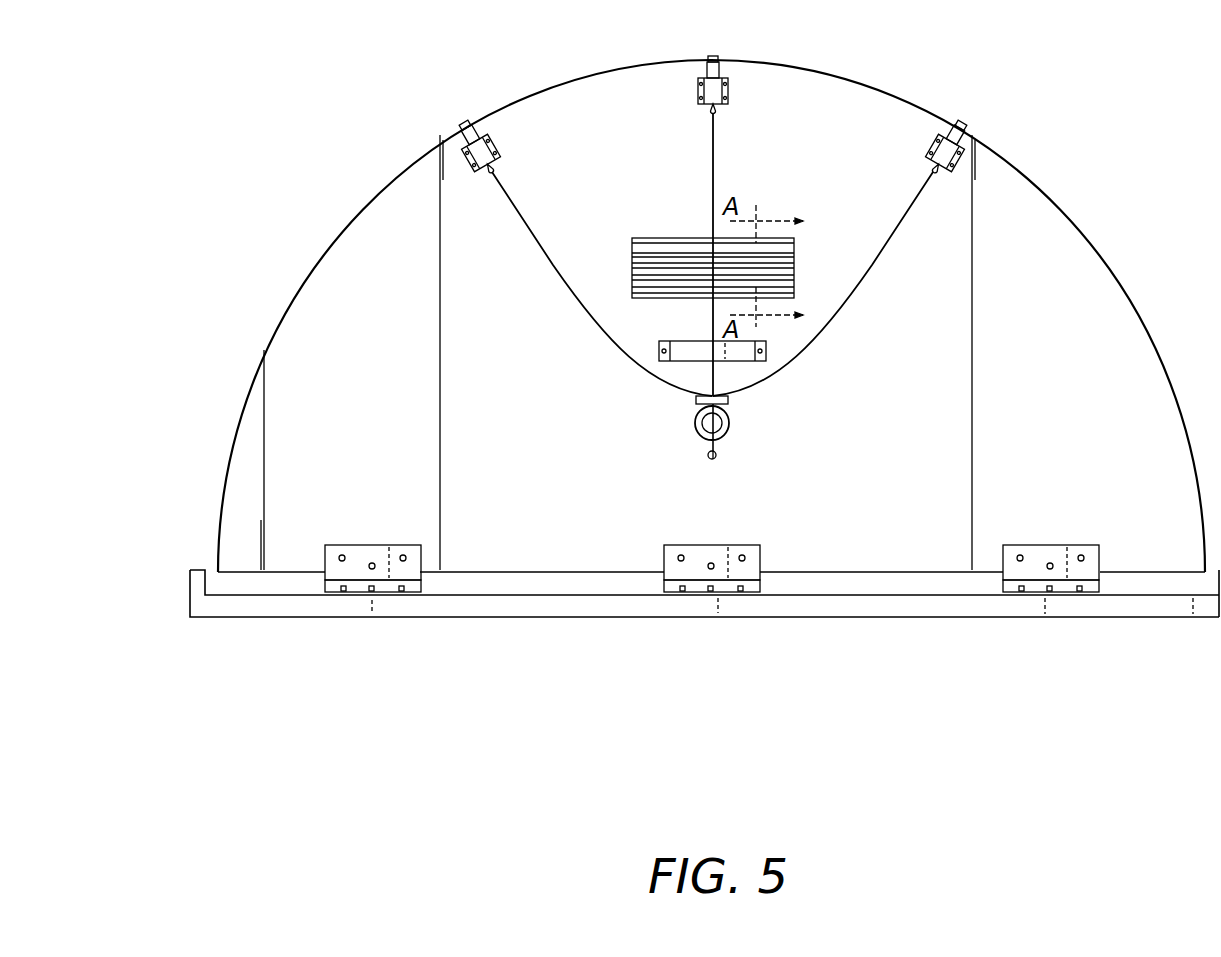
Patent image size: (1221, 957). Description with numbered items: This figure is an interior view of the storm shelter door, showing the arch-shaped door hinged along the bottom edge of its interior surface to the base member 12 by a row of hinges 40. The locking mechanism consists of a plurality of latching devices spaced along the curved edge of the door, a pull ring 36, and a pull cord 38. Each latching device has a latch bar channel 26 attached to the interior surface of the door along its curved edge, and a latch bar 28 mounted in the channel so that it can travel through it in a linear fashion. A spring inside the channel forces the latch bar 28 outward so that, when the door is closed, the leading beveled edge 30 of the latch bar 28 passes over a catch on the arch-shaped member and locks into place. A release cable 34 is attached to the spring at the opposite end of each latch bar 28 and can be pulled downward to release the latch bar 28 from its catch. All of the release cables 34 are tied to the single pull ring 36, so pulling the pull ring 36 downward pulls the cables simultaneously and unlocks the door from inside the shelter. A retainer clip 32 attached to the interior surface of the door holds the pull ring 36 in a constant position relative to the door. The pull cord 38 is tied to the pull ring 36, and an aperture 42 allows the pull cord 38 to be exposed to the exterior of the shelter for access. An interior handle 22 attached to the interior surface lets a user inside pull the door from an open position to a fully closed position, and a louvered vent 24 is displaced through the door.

The base member 12 is at (562, 607).
The interior handle 22 is at (757, 362).
The louvered vent 24 is at (643, 246).
The latch bar channel 26 is at (700, 98).
The latch bar 28 is at (494, 142).
The leading beveled edge 30 is at (462, 127).
The retainer clip 32 is at (696, 400).
The release cable 34 is at (712, 165).
The pull ring 36 is at (696, 428).
The pull cord 38 is at (708, 456).
The hinges 40 is at (343, 565).
The aperture 42 is at (722, 460).